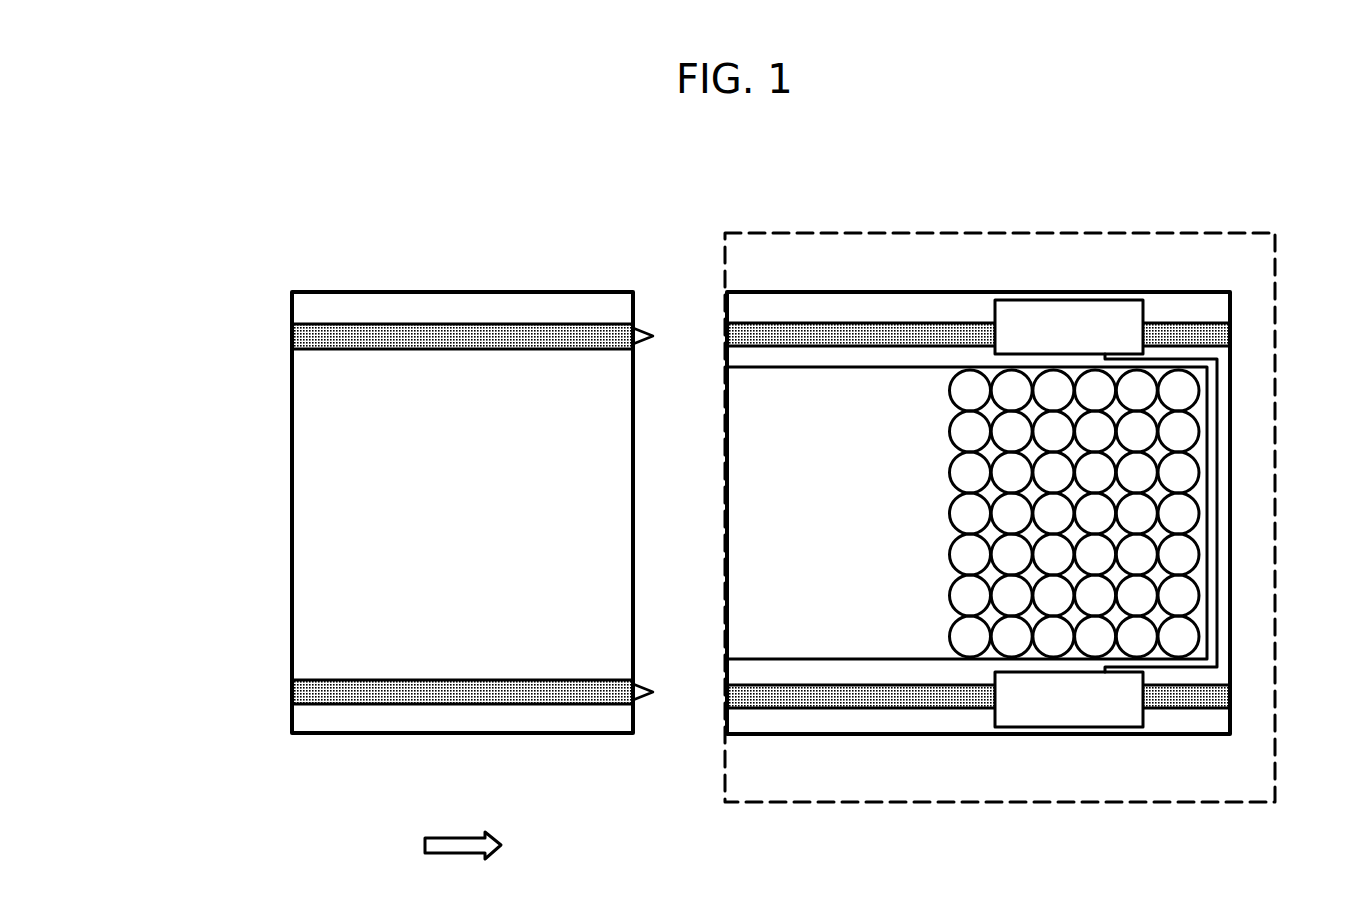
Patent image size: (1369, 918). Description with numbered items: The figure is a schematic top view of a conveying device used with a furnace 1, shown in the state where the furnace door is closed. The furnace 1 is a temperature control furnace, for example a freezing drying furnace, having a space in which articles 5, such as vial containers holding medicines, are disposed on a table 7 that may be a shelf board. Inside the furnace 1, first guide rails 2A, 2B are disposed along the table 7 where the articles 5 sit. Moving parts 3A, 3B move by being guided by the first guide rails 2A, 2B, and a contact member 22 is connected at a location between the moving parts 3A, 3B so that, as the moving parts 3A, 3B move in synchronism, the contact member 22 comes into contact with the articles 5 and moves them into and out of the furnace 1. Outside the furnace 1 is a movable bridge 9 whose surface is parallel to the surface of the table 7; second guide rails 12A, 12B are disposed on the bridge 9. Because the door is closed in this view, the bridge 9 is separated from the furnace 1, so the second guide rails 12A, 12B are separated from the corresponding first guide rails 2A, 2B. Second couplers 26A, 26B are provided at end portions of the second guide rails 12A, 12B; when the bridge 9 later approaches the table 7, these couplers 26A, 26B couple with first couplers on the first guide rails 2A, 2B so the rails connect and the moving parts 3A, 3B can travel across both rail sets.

The furnace 1 is at (746, 228).
The first guide rail 2A is at (797, 706).
The first guide rail 2B is at (791, 328).
The moving part 3A is at (1028, 715).
The moving part 3B is at (1018, 316).
The articles 5 is at (1183, 437).
The table 7 is at (1220, 600).
The bridge 9 is at (383, 523).
The second guide rail 12A is at (337, 705).
The second guide rail 12B is at (330, 323).
The contact member 22 is at (1217, 528).
The second coupler 26A is at (647, 698).
The second coupler 26B is at (647, 342).